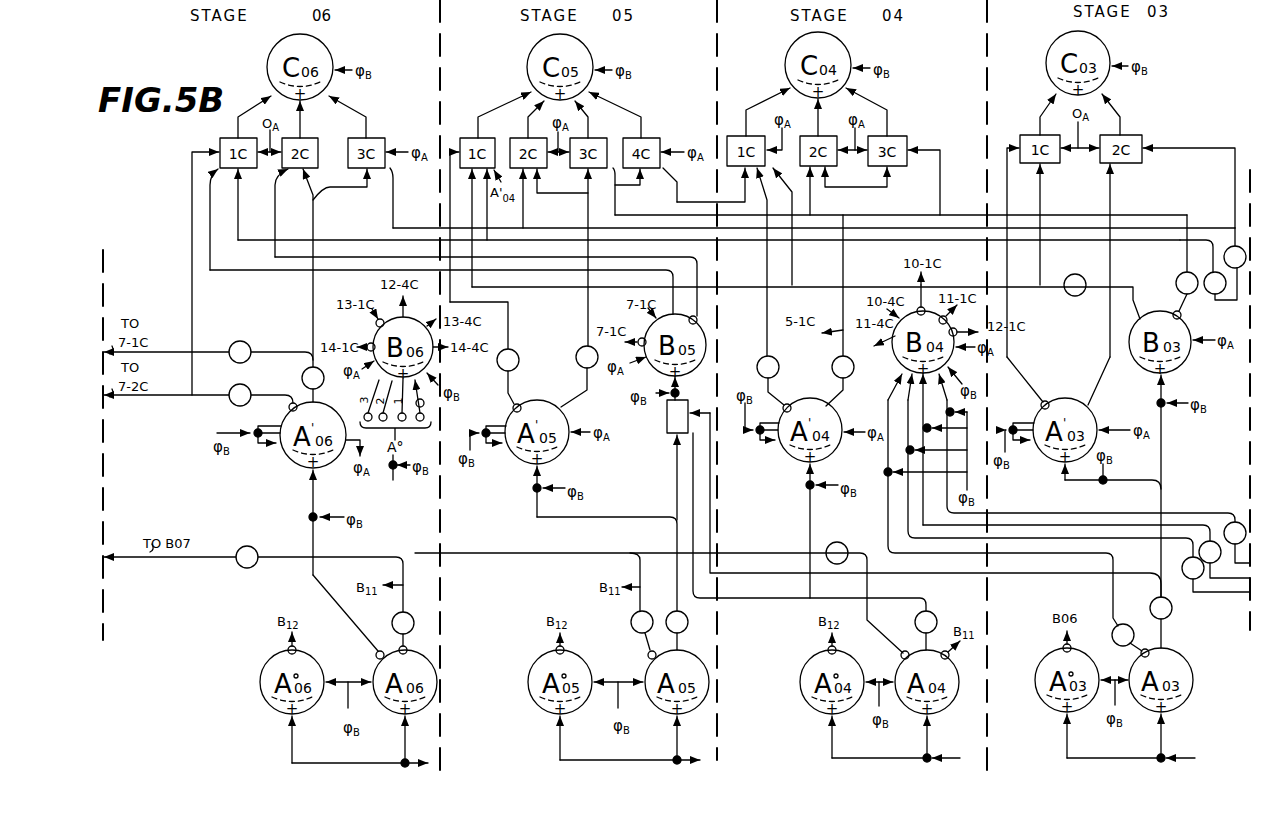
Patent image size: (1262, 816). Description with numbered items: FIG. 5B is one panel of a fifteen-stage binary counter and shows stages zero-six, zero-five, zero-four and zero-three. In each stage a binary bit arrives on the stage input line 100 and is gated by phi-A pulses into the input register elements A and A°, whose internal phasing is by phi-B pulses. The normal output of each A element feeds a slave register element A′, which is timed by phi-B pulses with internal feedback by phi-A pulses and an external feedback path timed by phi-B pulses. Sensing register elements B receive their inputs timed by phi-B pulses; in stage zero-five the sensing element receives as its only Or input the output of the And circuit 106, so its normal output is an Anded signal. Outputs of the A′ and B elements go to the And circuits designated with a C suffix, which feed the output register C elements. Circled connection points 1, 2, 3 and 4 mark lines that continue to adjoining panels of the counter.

The circled connection point 1 is at (737, 460).
The circled connection point 2 is at (713, 459).
The circled connection point 3 is at (737, 482).
The circled connection point 4 is at (741, 407).
The stage input line 100 is at (405, 765).
The And circuit 106 is at (667, 430).